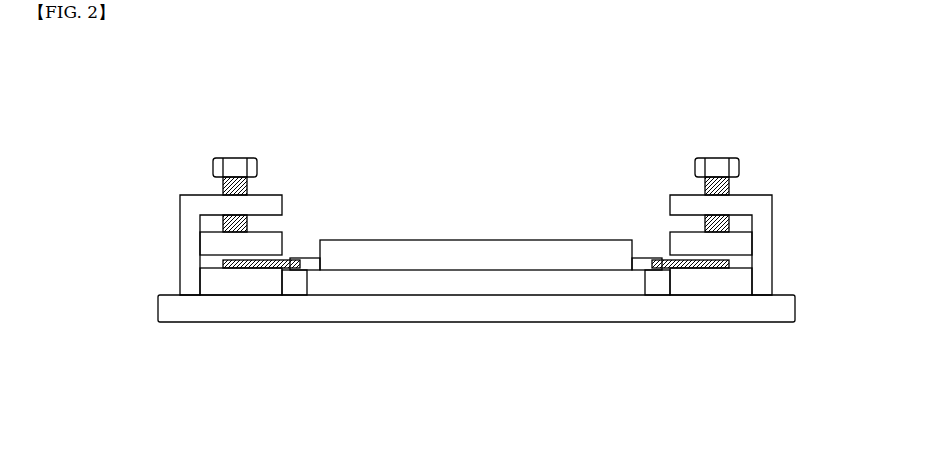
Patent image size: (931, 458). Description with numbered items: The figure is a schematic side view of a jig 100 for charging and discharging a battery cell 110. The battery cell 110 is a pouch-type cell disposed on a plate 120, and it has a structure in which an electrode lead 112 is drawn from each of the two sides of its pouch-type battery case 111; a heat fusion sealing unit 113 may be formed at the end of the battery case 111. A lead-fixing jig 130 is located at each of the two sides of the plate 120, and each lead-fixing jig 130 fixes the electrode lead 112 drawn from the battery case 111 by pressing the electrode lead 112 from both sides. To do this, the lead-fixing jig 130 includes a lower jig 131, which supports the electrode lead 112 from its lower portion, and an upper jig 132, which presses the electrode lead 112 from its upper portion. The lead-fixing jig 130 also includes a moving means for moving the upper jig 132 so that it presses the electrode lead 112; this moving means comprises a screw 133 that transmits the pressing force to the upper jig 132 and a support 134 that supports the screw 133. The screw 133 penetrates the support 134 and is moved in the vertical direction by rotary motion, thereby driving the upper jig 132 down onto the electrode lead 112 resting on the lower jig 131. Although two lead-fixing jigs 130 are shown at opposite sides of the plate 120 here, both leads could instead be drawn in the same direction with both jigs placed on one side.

The jig 100 is at (113, 98).
The battery cell 110 is at (462, 306).
The battery case 111 is at (350, 270).
The electrode lead 112 is at (233, 300).
The heat fusion sealing unit 113 is at (283, 269).
The plate 120 is at (480, 321).
The lead-fixing jig 130 is at (768, 199).
The lower jig 131 is at (743, 279).
The upper jig 132 is at (747, 242).
The screw 133 is at (728, 162).
The support 134 is at (760, 193).